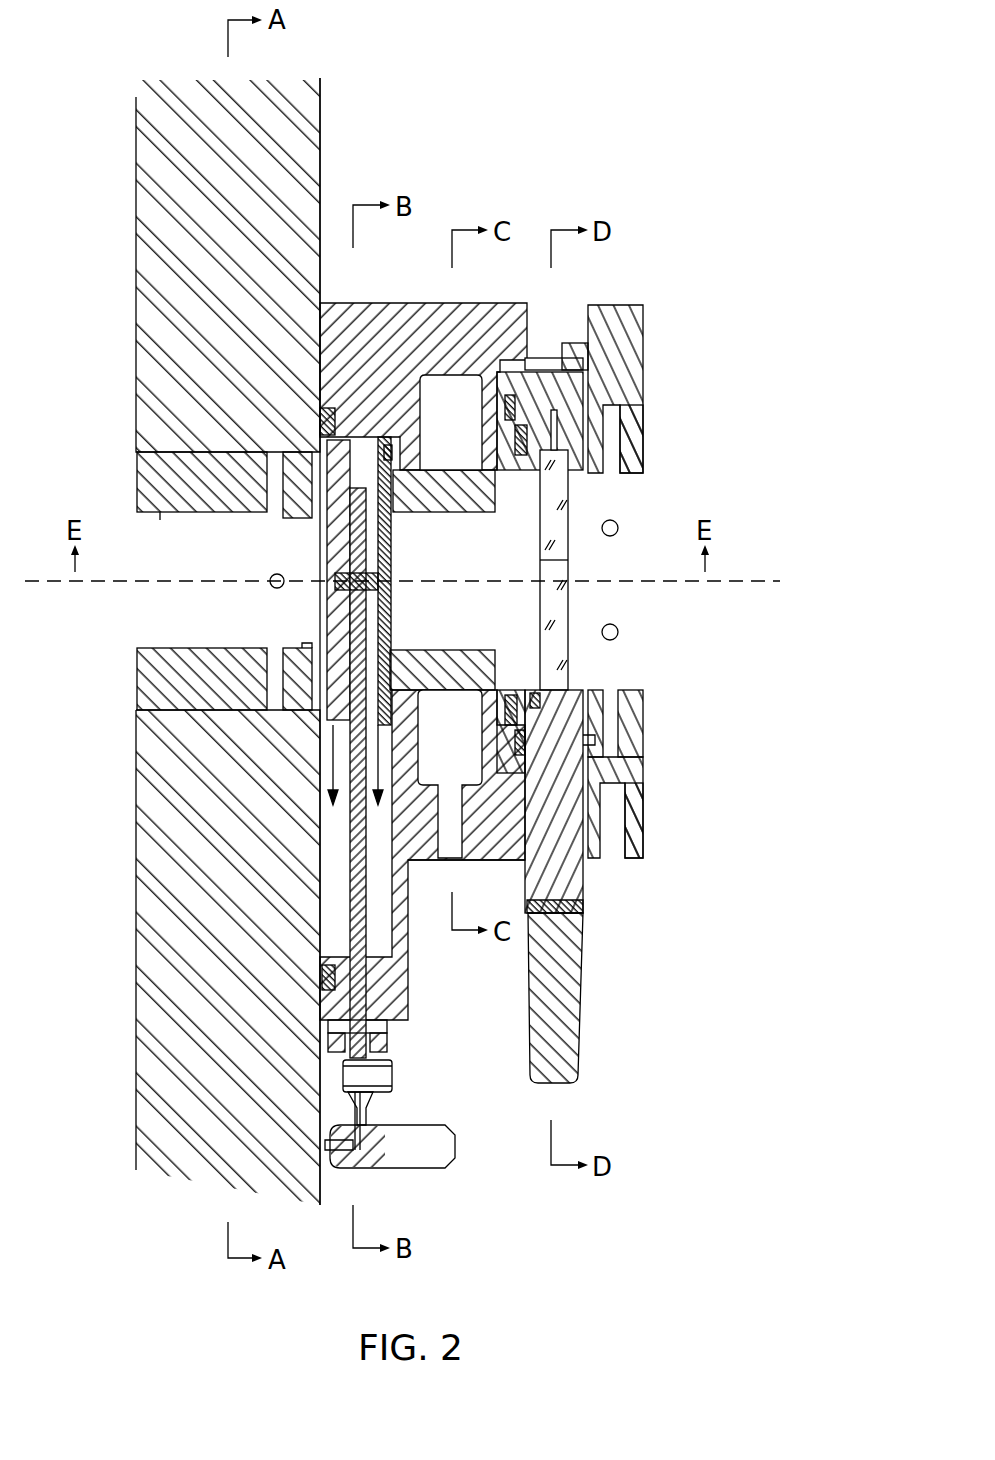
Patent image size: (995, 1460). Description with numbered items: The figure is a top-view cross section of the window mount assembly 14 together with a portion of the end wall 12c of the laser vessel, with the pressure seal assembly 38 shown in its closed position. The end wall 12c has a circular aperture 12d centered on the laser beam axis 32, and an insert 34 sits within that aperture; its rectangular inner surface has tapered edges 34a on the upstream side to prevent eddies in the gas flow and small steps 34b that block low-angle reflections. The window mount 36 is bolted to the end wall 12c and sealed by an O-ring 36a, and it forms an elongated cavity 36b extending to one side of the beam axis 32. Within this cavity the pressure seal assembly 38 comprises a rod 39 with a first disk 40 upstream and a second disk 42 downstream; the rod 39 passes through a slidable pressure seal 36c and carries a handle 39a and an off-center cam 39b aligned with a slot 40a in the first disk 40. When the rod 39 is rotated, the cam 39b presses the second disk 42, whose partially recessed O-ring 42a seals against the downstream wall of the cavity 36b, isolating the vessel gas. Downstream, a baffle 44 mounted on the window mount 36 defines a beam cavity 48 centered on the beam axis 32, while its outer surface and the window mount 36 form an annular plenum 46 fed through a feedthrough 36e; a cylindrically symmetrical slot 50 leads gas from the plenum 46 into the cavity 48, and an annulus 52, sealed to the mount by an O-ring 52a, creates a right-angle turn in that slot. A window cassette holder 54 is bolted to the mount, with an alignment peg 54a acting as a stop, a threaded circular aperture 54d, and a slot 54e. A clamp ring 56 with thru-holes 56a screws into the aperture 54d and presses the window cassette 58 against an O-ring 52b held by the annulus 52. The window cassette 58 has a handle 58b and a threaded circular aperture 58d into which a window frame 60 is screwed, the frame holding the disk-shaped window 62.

The end wall 12c is at (140, 233).
The circular aperture 12d is at (140, 722).
The window mount assembly 14 is at (768, 1212).
The laser beam axis 32 is at (730, 583).
The insert 34 is at (145, 692).
The tapered edges 34a is at (145, 653).
The steps 34b is at (300, 515).
The window mount 36 is at (373, 303).
The O-ring 36a is at (320, 418).
The elongated cavity 36b is at (330, 838).
The slidable pressure seal 36c is at (405, 1042).
The feedthrough 36e is at (447, 880).
The pressure seal assembly 38 is at (450, 1202).
The rod 39 is at (352, 882).
The handle 39a is at (440, 1156).
The cam 39b is at (378, 590).
The first disk 40 is at (327, 617).
The slot 40a is at (325, 582).
The second disk 42 is at (392, 542).
The O-ring 42a is at (395, 440).
The baffle 44 is at (478, 470).
The annular plenum 46 is at (464, 428).
The beam cavity 48 is at (498, 570).
The slot 50 is at (505, 490).
The annulus 52 is at (518, 395).
The O-ring 52a is at (530, 400).
The O-ring 52b is at (590, 742).
The window cassette holder 54 is at (643, 330).
The alignment peg 54a is at (570, 343).
The threaded circular aperture 54d is at (643, 420).
The slot 54e is at (628, 840).
The clamp ring 56 is at (643, 720).
The thru-holes 56a is at (620, 510).
The window cassette 58 is at (578, 690).
The handle 58b is at (580, 1062).
The threaded circular aperture 58d is at (565, 470).
The window frame 60 is at (548, 692).
The window 62 is at (568, 556).